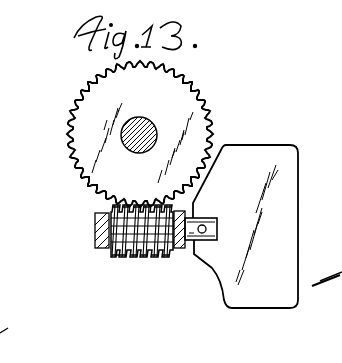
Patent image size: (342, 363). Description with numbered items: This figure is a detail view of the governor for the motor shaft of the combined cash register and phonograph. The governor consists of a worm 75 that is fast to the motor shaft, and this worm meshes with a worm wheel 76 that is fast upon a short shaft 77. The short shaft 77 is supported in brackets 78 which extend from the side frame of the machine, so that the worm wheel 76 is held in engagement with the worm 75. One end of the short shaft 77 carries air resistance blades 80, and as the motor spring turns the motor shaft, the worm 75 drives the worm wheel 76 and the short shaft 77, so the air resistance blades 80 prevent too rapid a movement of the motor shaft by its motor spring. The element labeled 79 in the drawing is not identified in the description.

The worm 75 is at (82, 95).
The gear hub / shaft opening 79 is at (138, 118).
The worm wheel 76 is at (146, 257).
The brackets 78 is at (95, 214).
The short shaft 77 is at (216, 218).
The air resistance blades 80 is at (290, 203).